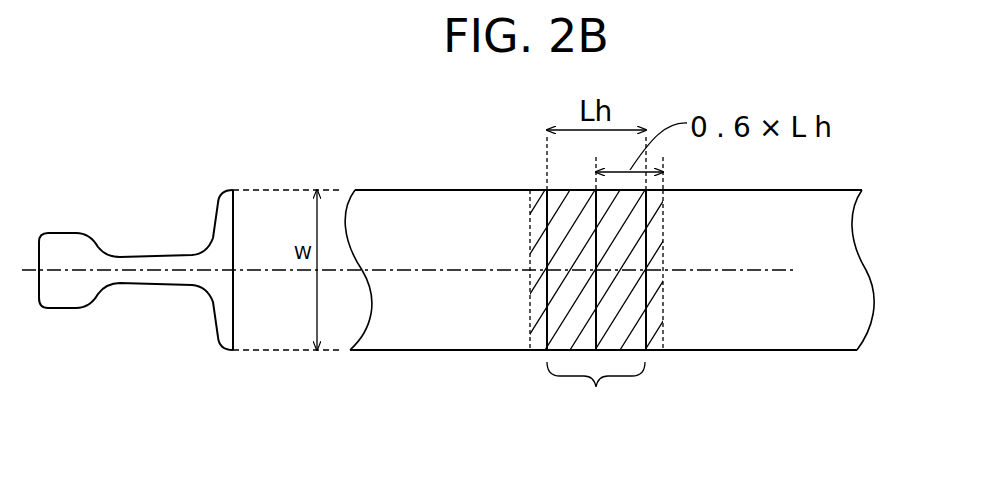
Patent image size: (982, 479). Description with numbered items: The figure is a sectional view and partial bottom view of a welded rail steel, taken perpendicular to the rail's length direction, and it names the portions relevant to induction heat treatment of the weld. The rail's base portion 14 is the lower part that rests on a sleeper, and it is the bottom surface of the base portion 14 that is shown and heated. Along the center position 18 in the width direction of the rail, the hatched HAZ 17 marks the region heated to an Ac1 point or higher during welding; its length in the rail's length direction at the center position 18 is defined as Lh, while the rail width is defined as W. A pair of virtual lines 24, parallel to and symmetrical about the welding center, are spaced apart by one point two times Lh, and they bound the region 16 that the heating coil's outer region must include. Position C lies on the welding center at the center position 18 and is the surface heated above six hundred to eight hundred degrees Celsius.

The base portion 14 is at (857, 282).
The region 16 is at (650, 288).
The HAZ 17 is at (596, 396).
The center position 18 is at (473, 270).
The virtual lines 24 is at (530, 243).
The position C is at (596, 270).